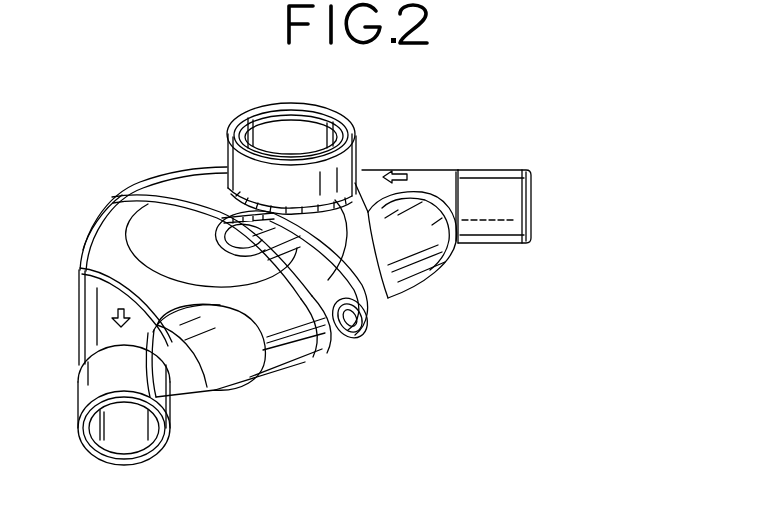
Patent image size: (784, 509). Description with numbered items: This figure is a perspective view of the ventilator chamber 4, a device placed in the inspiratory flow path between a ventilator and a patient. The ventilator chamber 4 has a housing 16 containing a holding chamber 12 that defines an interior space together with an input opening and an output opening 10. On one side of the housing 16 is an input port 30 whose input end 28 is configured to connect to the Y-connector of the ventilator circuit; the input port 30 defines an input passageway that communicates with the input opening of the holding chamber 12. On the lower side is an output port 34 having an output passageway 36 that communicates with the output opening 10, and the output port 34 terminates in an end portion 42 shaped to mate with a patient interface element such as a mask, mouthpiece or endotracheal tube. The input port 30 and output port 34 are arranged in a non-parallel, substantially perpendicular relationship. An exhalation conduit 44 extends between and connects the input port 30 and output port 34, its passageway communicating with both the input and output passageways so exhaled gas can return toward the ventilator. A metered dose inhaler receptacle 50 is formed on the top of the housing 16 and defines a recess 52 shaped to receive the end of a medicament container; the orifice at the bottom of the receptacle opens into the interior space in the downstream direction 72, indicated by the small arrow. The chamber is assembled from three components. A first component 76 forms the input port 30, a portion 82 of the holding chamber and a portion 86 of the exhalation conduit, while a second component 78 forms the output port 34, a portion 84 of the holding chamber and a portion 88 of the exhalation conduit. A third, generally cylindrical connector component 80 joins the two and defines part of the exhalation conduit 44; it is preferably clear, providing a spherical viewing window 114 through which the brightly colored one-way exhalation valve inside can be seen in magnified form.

The ventilator chamber 4 is at (121, 103).
The output opening 10 is at (7, 63).
The holding chamber 12 is at (197, 200).
The housing 16 is at (114, 211).
The input end 28 is at (517, 171).
The input port 30 is at (478, 171).
The output port 34 is at (172, 405).
The output passageway 36 is at (126, 438).
The end portion 42 is at (98, 397).
The exhalation conduit 44 is at (300, 355).
The MDI receptacle 50 is at (350, 113).
The recess 52 is at (299, 128).
The downstream direction 72 is at (404, 176).
The first component 76 is at (371, 174).
The second component 78 is at (80, 268).
The connector component 80 is at (326, 336).
The portion of the holding chamber 82 is at (190, 166).
The portion of the holding chamber 84 is at (78, 255).
The portion of the exhalation conduit 86 is at (408, 242).
The portion of the exhalation conduit 88 is at (230, 358).
The viewing window 114 is at (355, 328).